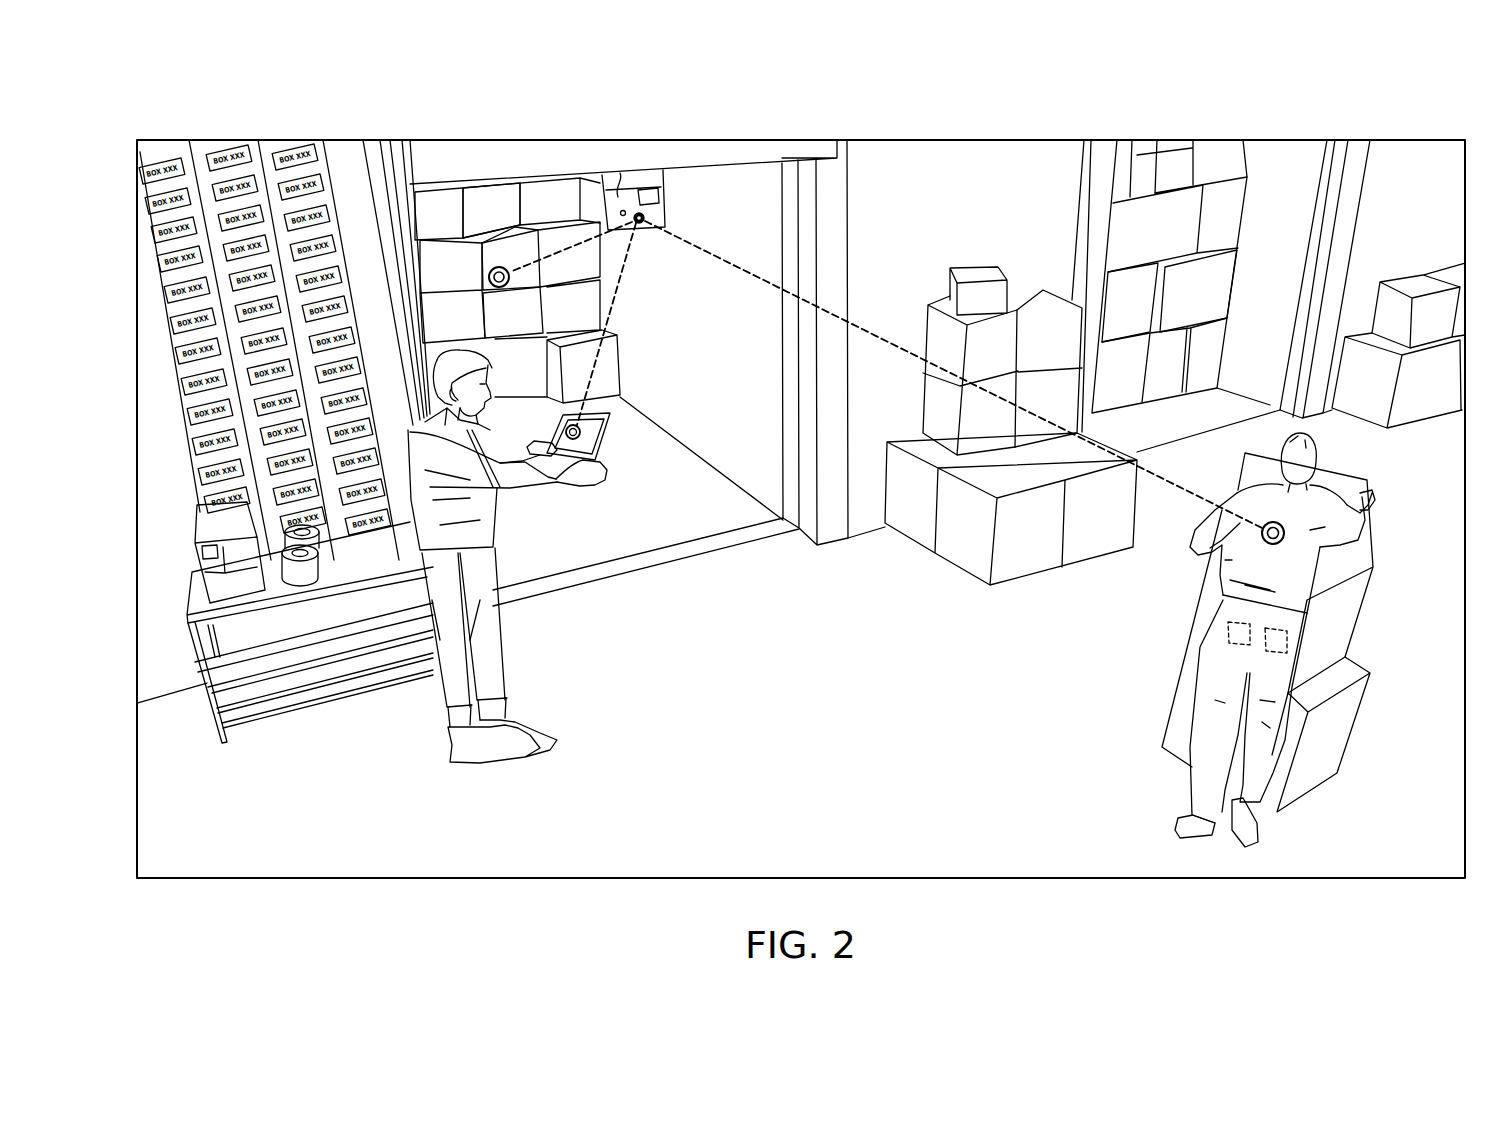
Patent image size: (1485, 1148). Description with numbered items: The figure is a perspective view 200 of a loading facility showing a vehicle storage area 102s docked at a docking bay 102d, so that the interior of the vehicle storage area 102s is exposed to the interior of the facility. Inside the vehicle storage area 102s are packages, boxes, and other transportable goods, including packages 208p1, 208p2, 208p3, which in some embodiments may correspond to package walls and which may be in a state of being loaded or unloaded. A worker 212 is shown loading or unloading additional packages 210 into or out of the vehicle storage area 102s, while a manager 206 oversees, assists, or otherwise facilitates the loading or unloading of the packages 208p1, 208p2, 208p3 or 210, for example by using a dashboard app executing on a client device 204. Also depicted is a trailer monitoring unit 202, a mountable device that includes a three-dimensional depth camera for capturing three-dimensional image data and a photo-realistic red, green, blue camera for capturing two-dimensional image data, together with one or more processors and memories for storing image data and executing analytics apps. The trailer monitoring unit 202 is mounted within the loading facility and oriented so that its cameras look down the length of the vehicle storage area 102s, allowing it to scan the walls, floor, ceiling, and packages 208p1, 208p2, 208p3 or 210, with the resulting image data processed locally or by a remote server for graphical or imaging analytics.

The perspective view 200 is at (172, 86).
The trailer monitoring unit (TMU) 202 is at (657, 215).
The client device 204 is at (590, 433).
The manager 206 is at (490, 653).
The package 208p1 is at (503, 195).
The package 208p2 is at (490, 271).
The package 208p3 is at (620, 377).
The additional packages 210 is at (1347, 482).
The worker 212 is at (1258, 498).
The docking bay 102d is at (800, 453).
The vehicle storage area 102s is at (667, 535).